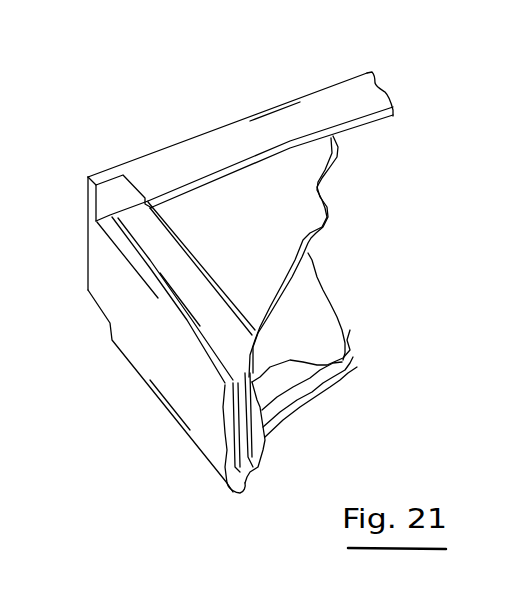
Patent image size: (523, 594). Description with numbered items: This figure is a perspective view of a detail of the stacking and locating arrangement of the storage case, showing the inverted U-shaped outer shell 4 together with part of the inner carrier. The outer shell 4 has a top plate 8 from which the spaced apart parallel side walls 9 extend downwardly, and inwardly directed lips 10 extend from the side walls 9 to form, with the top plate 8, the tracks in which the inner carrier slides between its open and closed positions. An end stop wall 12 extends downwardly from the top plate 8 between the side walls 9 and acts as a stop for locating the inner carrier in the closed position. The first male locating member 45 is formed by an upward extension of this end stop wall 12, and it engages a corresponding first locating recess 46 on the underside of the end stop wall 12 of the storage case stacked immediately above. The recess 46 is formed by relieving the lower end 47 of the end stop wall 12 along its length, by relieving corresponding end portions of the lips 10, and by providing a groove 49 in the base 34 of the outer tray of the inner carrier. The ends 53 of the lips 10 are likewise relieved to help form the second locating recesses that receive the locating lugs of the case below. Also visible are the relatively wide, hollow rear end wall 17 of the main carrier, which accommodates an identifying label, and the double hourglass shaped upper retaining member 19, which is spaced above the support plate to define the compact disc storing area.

The outer shell 4 is at (187, 410).
The top plate 8 is at (297, 413).
The side walls 9 is at (103, 195).
The lips 10 is at (333, 105).
The end stop wall 12 is at (170, 387).
The rear end wall 17 is at (343, 372).
The upper retaining member 19 is at (327, 310).
The base 34 is at (275, 180).
The first male locating member 45 is at (242, 490).
The first locating recess 46 is at (162, 256).
The lower end 47 is at (157, 297).
The groove 49 is at (197, 285).
The ends 53 is at (123, 178).